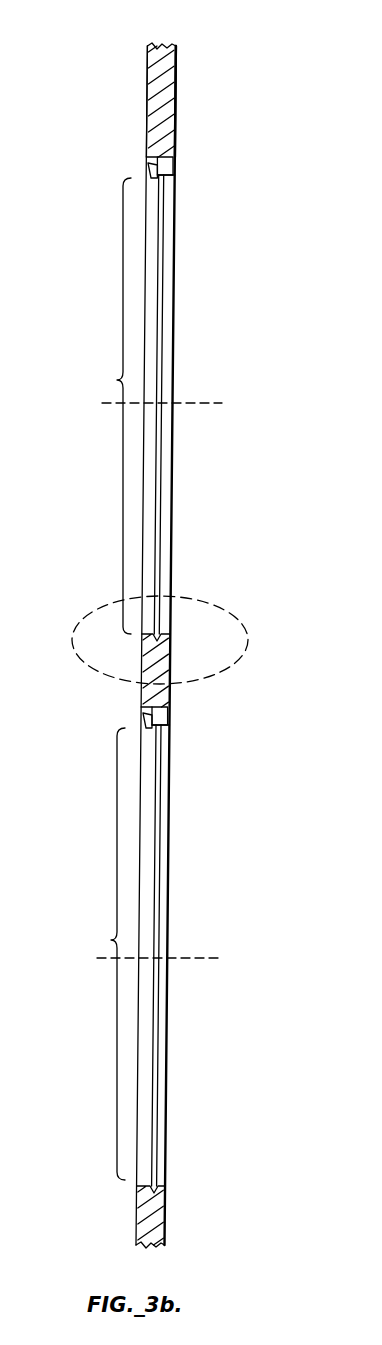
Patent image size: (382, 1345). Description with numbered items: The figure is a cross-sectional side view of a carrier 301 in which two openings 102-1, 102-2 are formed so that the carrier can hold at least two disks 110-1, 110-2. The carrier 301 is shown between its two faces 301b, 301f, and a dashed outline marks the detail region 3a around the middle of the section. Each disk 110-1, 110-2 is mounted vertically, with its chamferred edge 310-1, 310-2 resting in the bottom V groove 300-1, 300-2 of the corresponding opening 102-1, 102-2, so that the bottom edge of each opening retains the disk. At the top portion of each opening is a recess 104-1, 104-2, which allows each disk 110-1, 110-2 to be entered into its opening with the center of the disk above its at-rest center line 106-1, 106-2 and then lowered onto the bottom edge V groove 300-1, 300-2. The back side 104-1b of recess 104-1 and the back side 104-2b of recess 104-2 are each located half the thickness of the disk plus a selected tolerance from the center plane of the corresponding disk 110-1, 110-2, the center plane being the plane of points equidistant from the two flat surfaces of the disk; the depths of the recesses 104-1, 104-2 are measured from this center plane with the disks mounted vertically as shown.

The carrier 301 is at (170, 48).
The rear face of block 301b is at (150, 98).
The front face of block 301f is at (177, 96).
The recess 104-1 is at (167, 167).
The back side of recess 104-1b is at (155, 168).
The chamferred edge 310-1 is at (172, 177).
The disk 110-1 is at (163, 297).
The opening 102-1 is at (87, 406).
The at-rest center line 106-1 is at (204, 403).
The detail region 3a is at (93, 615).
The bottom edge V groove 300-1 is at (163, 634).
The recess 104-2 is at (161, 717).
The back side of recess 104-2b is at (148, 718).
The chamferred edge 310-2 is at (166, 727).
The disk 110-2 is at (158, 826).
The opening 102-2 is at (82, 954).
The at-rest center line 106-2 is at (197, 958).
The bottom edge V groove 300-2 is at (158, 1183).